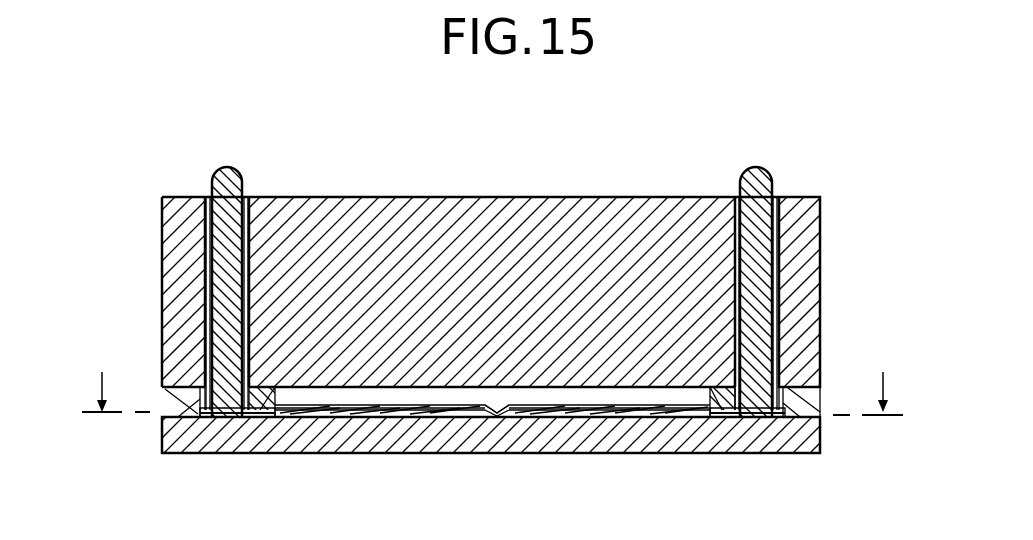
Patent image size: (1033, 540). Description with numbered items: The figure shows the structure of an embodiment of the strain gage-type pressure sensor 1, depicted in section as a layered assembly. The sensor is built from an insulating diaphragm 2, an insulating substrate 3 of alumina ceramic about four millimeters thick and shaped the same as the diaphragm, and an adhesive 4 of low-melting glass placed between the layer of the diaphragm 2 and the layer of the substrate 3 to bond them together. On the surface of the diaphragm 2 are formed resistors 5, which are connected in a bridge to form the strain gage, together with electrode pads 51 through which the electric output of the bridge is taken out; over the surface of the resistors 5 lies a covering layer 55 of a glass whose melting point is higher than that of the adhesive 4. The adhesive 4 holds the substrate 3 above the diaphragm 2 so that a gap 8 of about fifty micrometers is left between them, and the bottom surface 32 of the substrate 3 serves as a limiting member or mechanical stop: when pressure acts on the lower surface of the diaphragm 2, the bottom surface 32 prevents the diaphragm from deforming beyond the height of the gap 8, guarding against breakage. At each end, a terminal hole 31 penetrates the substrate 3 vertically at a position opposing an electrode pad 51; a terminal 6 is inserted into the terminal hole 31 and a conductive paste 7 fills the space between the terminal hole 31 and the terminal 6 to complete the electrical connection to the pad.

The strain gage-type pressure sensor 1 is at (527, 162).
The diaphragm 2 is at (668, 453).
The substrate 3 is at (492, 237).
The terminal hole 31 is at (207, 278).
The bottom surface 32 is at (354, 385).
The adhesive 4 is at (172, 413).
The resistors 5 is at (385, 417).
The electrode pad 51 is at (222, 418).
The covering layer 55 is at (292, 417).
The terminal 6 is at (229, 170).
The conductive paste 7 is at (207, 197).
The gap 8 is at (497, 414).